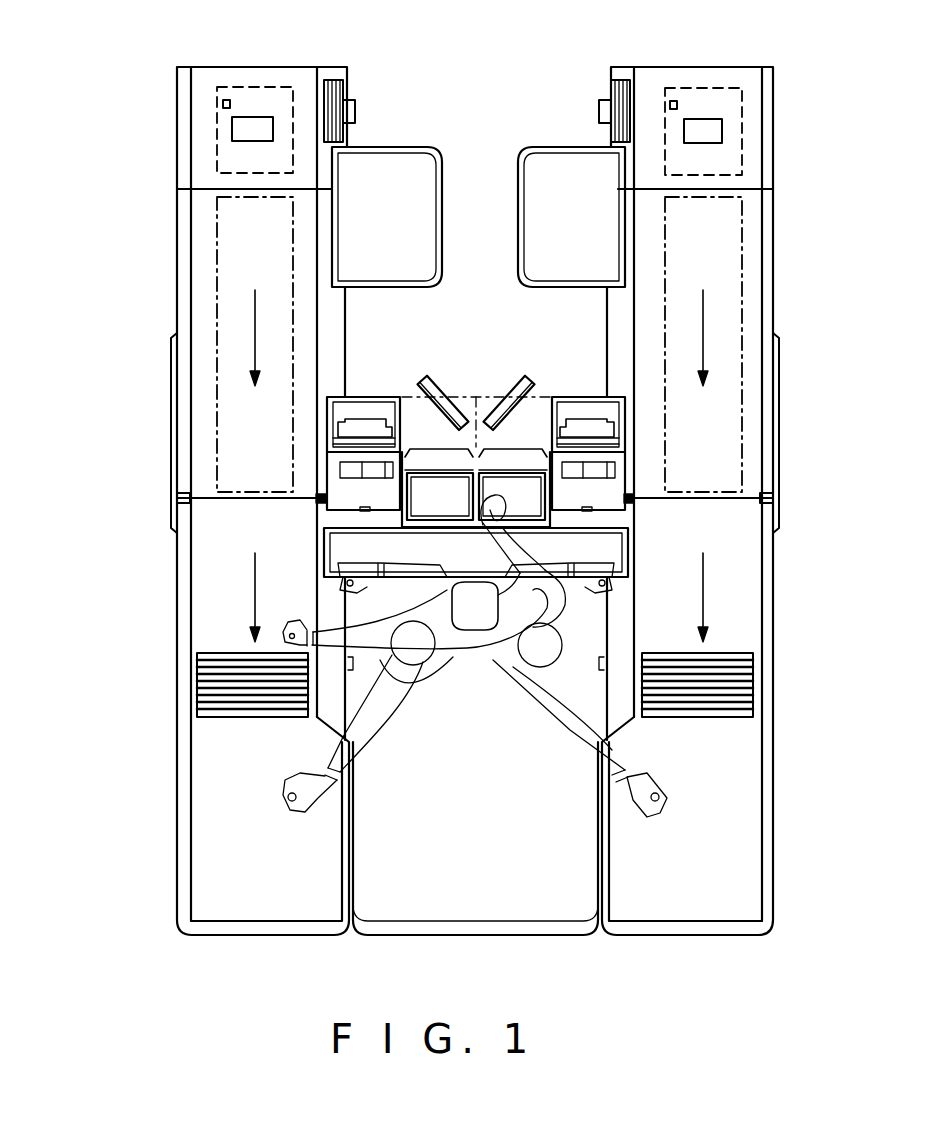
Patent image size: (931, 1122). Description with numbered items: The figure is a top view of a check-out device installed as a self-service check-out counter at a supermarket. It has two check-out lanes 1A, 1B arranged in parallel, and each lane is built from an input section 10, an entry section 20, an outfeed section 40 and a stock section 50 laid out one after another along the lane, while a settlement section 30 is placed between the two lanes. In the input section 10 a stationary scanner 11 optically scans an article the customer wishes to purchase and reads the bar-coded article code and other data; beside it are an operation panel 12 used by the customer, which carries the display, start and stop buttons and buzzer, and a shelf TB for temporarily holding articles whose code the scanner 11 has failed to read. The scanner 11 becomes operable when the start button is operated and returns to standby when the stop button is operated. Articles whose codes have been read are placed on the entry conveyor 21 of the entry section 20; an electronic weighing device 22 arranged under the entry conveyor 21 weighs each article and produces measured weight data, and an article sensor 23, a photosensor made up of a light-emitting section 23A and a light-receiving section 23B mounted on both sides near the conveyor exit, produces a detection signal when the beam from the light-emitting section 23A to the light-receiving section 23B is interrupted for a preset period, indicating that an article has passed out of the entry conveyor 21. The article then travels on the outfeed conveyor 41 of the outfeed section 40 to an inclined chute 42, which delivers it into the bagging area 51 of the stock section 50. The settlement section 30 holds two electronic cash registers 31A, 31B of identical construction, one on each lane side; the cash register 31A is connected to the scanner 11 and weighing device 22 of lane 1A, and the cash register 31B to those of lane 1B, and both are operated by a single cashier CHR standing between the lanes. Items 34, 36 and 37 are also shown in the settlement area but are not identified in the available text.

The check-out lane 1A is at (287, 56).
The check-out lane 1B is at (694, 57).
The input section 10 is at (112, 67).
The stationary scanner 11 is at (217, 138).
The operation panel 12 is at (347, 90).
The shelf TB is at (420, 148).
The entry section 20 is at (112, 197).
The entry conveyor 21 is at (203, 287).
The electronic weighing device 22 is at (217, 227).
The article sensor 23 is at (164, 475).
The light-emitting section 23A is at (177, 498).
The light-receiving section 23B is at (319, 500).
The settlement section 30 is at (554, 327).
The electronic cash register 31A is at (432, 478).
The electronic cash register 31B is at (520, 483).
The operation panel 34 is at (340, 547).
The transfer arm 36 is at (514, 382).
The aligner 37 is at (368, 425).
The outfeed section 40 is at (112, 505).
The outfeed conveyor 41 is at (203, 580).
The inclined chute 42 is at (203, 682).
The stock section 50 is at (112, 722).
The bagging area 51 is at (207, 838).
The cashier CHR is at (455, 660).